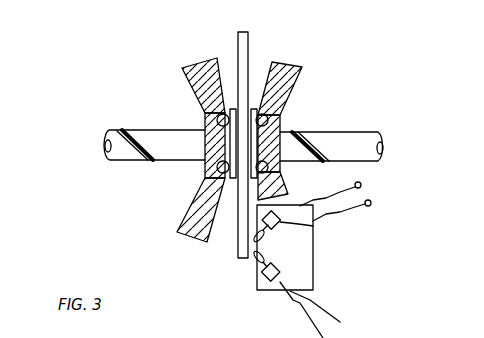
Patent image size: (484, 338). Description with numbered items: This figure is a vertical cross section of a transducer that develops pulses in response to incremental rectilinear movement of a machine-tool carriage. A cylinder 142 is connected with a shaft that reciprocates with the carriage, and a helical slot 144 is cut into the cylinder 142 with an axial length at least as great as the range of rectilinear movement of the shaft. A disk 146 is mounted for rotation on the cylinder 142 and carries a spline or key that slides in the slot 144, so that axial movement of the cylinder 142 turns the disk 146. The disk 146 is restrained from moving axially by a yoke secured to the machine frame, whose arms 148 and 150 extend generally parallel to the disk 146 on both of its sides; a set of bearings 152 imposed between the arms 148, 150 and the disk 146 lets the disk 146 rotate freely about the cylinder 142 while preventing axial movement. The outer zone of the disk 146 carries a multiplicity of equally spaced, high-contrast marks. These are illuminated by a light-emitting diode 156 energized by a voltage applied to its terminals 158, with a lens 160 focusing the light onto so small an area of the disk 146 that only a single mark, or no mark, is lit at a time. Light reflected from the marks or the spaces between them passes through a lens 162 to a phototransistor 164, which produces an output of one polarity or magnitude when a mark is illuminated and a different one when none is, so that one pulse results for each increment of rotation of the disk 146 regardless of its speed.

The cylinder 142 is at (167, 130).
The helical slot 144 is at (142, 150).
The disk 146 is at (249, 46).
The arm of yoke 148 is at (204, 188).
The arm of yoke 150 is at (284, 182).
The bearings 152 is at (230, 110).
The light-emitting diode 156 is at (314, 224).
The terminals 158 is at (377, 178).
The lens 160 is at (264, 243).
The lens 162 is at (257, 284).
The phototransistor 164 is at (280, 268).